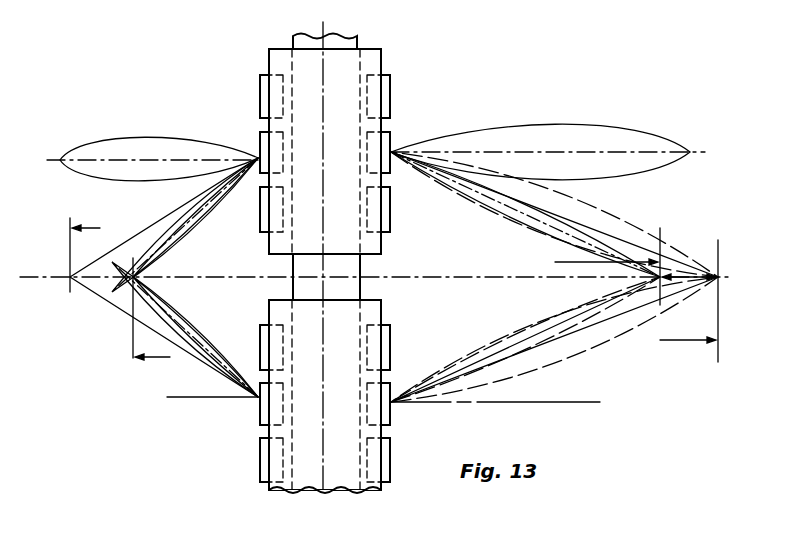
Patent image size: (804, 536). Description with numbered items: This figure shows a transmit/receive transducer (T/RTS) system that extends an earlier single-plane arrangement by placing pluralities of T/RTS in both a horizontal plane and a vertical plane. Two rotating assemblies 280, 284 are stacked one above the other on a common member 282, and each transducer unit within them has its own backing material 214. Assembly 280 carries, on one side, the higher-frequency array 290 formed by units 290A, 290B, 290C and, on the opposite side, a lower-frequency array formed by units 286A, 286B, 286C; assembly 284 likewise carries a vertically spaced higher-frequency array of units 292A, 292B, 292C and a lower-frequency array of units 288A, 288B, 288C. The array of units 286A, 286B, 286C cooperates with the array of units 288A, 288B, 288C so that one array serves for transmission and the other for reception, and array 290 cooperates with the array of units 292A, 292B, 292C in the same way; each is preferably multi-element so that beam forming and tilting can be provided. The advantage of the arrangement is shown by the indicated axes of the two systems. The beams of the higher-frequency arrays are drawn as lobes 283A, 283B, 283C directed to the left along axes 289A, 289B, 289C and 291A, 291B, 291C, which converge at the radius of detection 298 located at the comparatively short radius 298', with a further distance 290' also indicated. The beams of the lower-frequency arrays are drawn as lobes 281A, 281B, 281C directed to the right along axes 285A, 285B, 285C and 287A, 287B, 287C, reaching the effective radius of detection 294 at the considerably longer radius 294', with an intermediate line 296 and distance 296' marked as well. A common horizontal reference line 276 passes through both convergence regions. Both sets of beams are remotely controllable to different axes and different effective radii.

The backing material 214 is at (395, 115).
The central axis 276 is at (70, 283).
The rotating assembly 280 is at (383, 70).
The shaft 282 is at (360, 43).
The rotating assembly 284 is at (370, 302).
The T/RTS unit 290A is at (260, 97).
The T/RTS unit 290B is at (260, 152).
The T/RTS unit 290C is at (260, 212).
The T/RTS unit 286A is at (390, 95).
The T/RTS unit 286B is at (390, 152).
The T/RTS unit 286C is at (410, 200).
The T/RTS unit 292A is at (260, 340).
The T/RTS unit 292B is at (260, 410).
The T/RTS unit 292C is at (260, 458).
The T/RTS unit 288A is at (390, 338).
The T/RTS unit 288B is at (390, 385).
The T/RTS unit 288C is at (390, 460).
The left beam lobe 283A is at (110, 142).
The left downward beam lobe 283B is at (205, 182).
The left upward beam lobe 283C is at (212, 375).
The left beam axis 289A is at (72, 150).
The left beam axis 289B is at (88, 264).
The left beam axis 289C is at (190, 250).
The lower left beam axis 291A is at (180, 397).
The lower left beam axis 291B is at (125, 312).
The lower left beam axis 291C is at (165, 292).
The radius of detection 298 is at (46, 251).
The radius 298' is at (66, 209).
The array 290 is at (102, 308).
The focal distance 290' is at (144, 368).
The right beam lobe 281A is at (614, 124).
The right beam lobe 281B is at (593, 182).
The right beam lobe 281C is at (595, 355).
The right beam axis 285A is at (532, 152).
The right beam axis 285B is at (528, 215).
The right beam axis 285C is at (470, 200).
The lower right beam axis 287A is at (515, 403).
The lower right beam axis 287B is at (537, 350).
The lower right beam axis 287C is at (533, 330).
The focal plane 296 is at (661, 254).
The focal distance 296' is at (586, 268).
The effective radius of detection 294 is at (695, 296).
The radius 294' is at (690, 322).